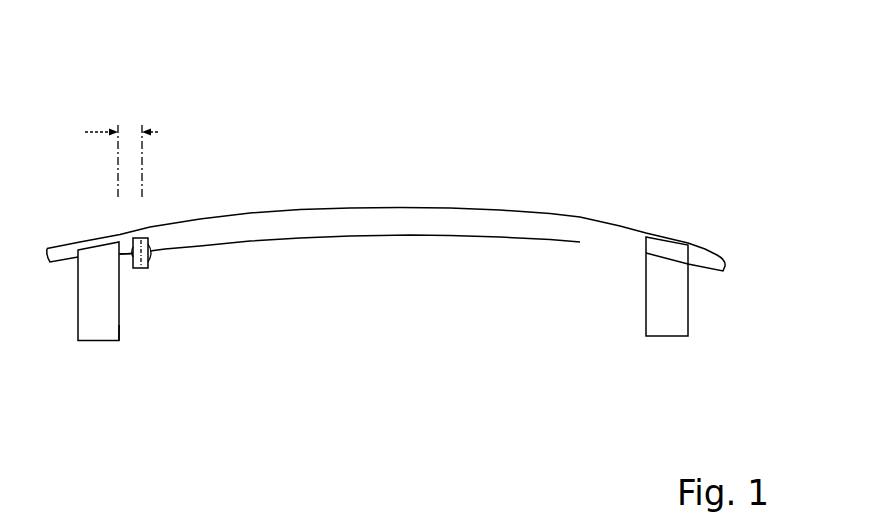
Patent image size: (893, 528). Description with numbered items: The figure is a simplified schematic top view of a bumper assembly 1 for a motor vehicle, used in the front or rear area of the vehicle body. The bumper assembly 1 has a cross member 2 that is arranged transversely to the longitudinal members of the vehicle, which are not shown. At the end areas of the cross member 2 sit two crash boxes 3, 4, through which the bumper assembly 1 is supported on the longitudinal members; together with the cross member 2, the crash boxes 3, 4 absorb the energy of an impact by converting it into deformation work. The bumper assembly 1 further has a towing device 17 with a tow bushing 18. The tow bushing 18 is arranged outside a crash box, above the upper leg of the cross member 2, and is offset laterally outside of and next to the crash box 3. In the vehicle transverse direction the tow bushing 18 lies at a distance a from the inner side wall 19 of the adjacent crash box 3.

The bumper assembly 1 is at (393, 214).
The cross member 2 is at (399, 207).
The crash box 3 is at (88, 320).
The crash box 4 is at (680, 317).
The towing device 17 is at (172, 274).
The tow bushing 18 is at (137, 270).
The inner side wall 19 is at (123, 326).